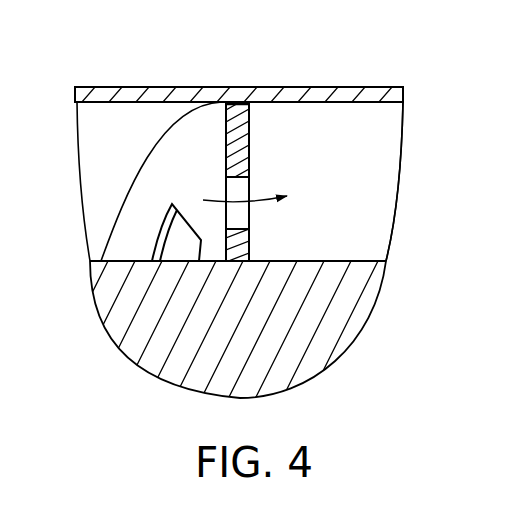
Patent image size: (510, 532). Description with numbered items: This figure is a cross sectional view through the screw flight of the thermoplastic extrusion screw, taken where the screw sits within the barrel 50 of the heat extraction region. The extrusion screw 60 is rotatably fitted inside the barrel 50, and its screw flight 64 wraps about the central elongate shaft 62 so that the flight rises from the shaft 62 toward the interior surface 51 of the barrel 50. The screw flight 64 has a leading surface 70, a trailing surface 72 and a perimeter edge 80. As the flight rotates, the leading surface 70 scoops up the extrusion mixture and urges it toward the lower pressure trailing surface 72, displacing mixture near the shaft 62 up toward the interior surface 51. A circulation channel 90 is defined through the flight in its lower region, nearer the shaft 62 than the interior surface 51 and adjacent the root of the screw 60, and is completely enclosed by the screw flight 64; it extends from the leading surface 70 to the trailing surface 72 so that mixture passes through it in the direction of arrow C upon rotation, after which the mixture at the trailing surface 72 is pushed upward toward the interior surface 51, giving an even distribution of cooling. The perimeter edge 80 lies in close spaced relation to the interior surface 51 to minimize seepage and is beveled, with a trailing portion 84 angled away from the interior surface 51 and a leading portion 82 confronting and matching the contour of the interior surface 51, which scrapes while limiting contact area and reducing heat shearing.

The barrel 50 is at (329, 82).
The interior surface of the barrel 51 is at (383, 103).
The thermoplastic extrusion screw 60 is at (118, 183).
The central elongate shaft 62 is at (118, 331).
The screw flight 64 is at (165, 178).
The leading surface 70 is at (226, 157).
The trailing surface 72 is at (118, 245).
The perimeter edge 80 is at (237, 109).
The leading portion 82 is at (221, 102).
The trailing portion 84 is at (250, 103).
The circulation channel 90 is at (160, 215).